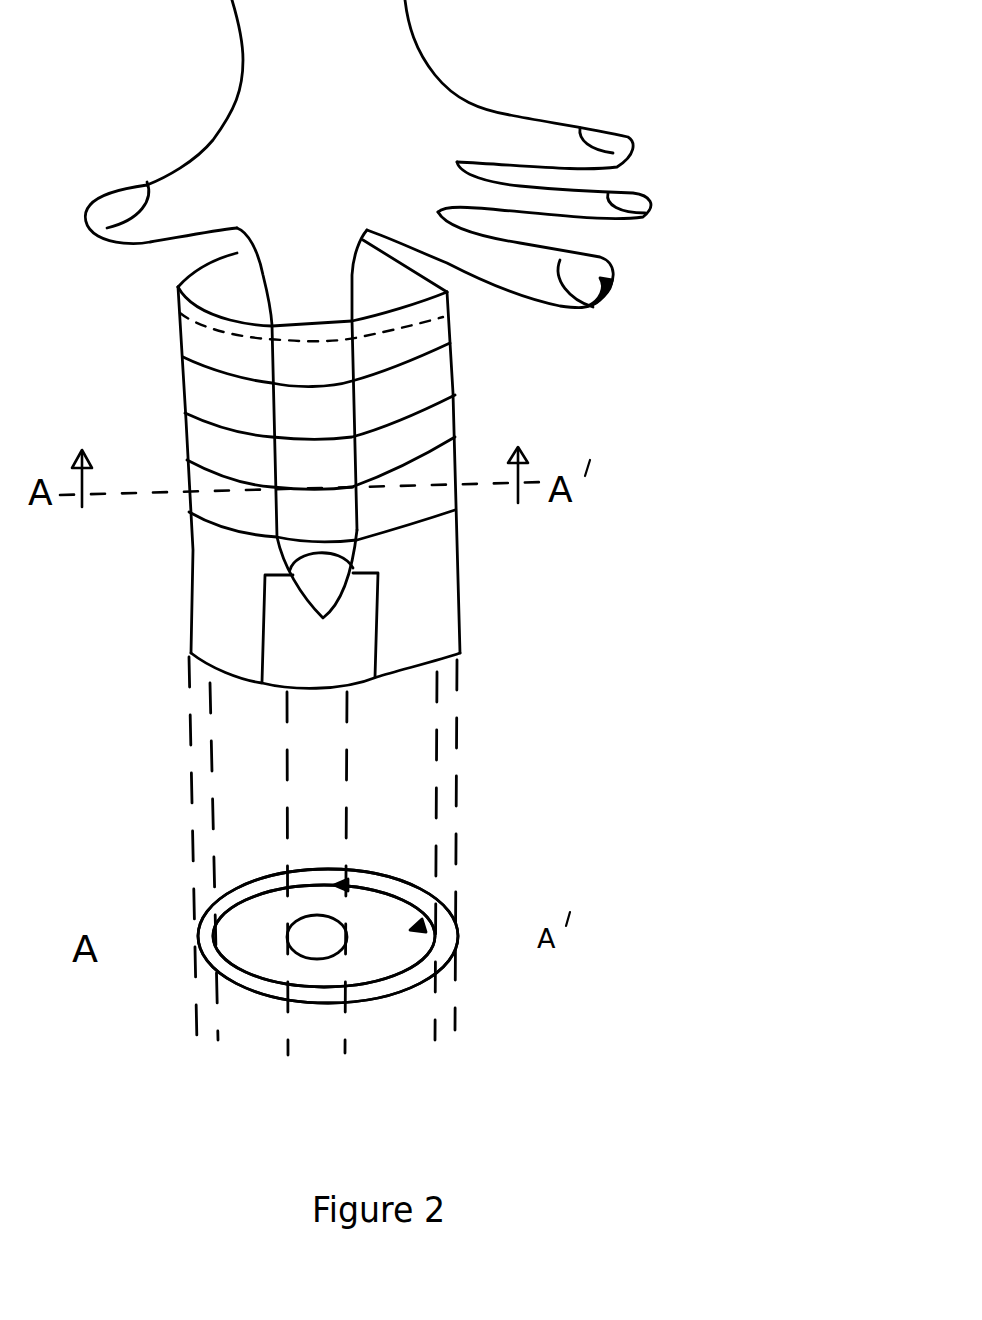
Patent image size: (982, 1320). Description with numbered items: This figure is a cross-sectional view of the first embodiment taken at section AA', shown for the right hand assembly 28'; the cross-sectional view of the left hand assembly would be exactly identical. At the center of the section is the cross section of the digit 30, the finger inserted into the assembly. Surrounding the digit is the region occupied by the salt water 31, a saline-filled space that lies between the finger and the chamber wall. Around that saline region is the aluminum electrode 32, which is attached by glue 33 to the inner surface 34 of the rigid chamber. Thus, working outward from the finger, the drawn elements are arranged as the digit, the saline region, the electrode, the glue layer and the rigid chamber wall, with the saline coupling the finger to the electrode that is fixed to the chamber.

The right hand assembly 28' is at (496, 458).
The cross section of the digit 30 is at (347, 932).
The region occupied by the salt water 31 is at (370, 945).
The aluminum electrode 32 is at (430, 943).
The glue 33 is at (413, 973).
The inner surface of the rigid chamber 34 is at (443, 968).